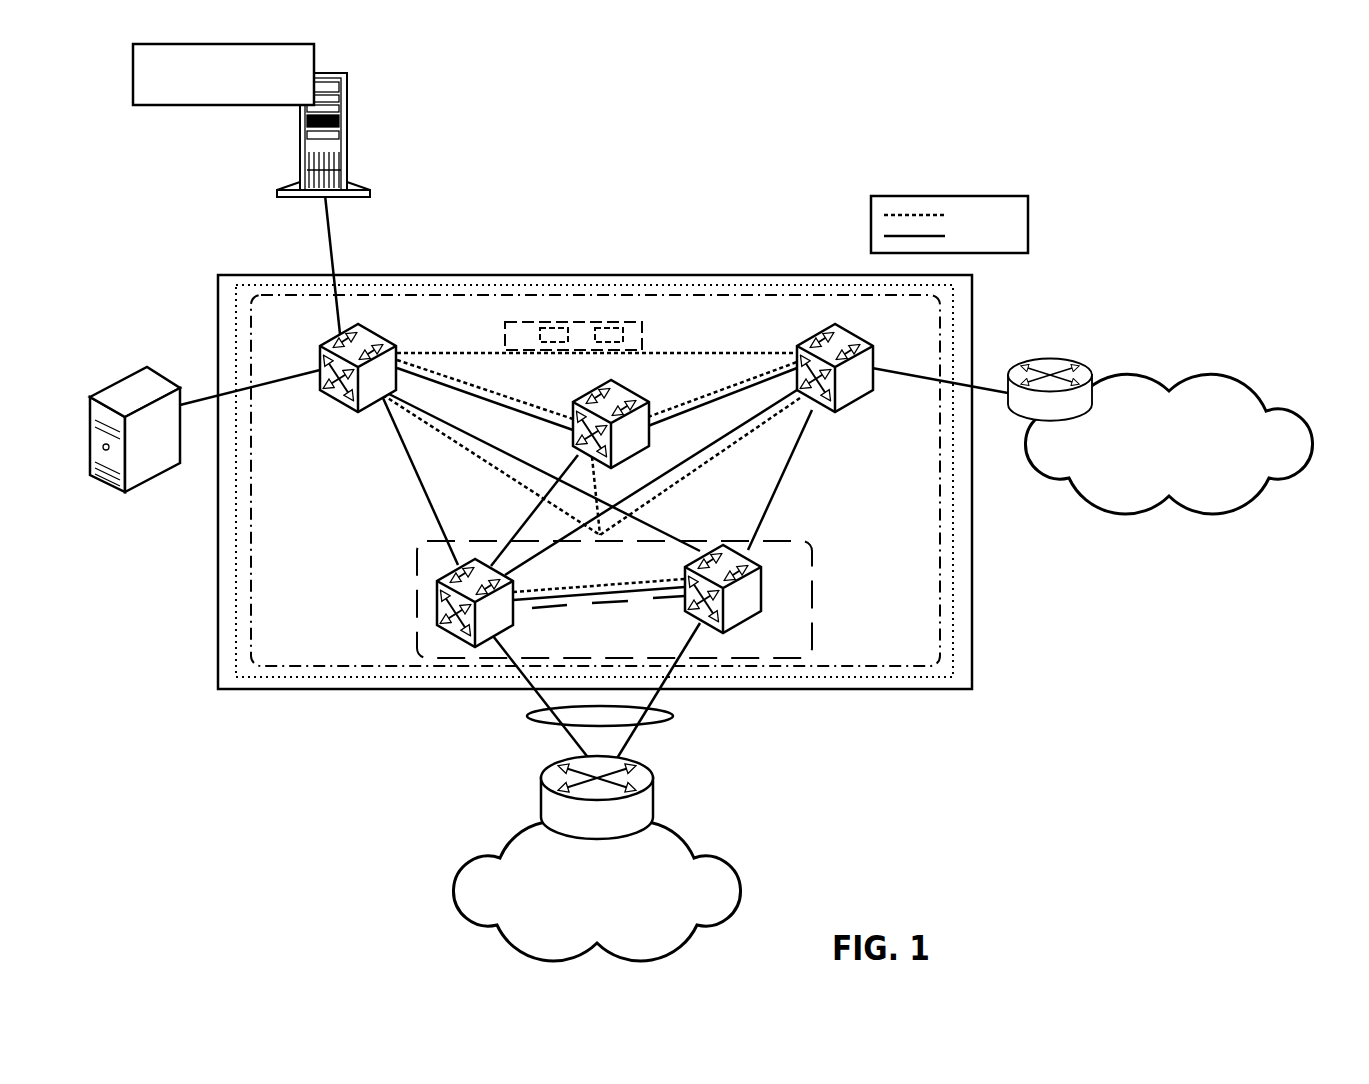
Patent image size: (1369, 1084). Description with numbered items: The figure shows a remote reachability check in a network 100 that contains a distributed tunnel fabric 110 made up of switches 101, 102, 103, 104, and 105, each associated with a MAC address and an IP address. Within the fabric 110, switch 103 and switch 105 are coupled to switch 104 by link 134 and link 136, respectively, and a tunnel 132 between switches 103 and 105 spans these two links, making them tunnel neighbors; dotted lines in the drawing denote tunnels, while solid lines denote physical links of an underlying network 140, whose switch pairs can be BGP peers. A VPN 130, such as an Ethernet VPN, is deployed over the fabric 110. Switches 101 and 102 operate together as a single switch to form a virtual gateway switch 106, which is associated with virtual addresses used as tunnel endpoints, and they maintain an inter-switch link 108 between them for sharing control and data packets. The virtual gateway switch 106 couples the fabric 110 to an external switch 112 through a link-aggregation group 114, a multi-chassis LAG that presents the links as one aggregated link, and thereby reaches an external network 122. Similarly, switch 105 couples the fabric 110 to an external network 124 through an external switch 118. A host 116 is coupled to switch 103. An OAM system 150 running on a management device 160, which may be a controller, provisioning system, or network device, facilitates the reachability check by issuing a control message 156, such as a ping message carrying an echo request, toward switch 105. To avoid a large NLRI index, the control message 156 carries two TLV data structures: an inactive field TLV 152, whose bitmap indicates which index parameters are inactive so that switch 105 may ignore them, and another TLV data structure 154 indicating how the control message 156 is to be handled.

The network 100 is at (701, 502).
The switch 101 is at (510, 628).
The switch 102 is at (763, 587).
The switch 103 is at (366, 331).
The switch 104 is at (633, 397).
The switch 105 is at (848, 330).
The virtual gateway switch 106 is at (417, 612).
The inter-switch link 108 is at (653, 600).
The distributed tunnel fabric 110 is at (702, 252).
The external switch 112 is at (652, 795).
The link-aggregation group 114 is at (673, 716).
The host 116 is at (153, 367).
The external switch 118 is at (1059, 358).
The external network 122 is at (611, 914).
The external network 124 is at (1183, 471).
The VPN 130 is at (953, 494).
The tunnel 132 is at (522, 354).
The link 134 is at (520, 416).
The link 136 is at (697, 403).
The underlying network 140 is at (940, 607).
The OAM system 150 is at (223, 74).
The inactive field TLV 152 is at (604, 328).
The TLV data structure 154 is at (542, 328).
The control message 156 is at (641, 331).
The management device 160 is at (350, 130).